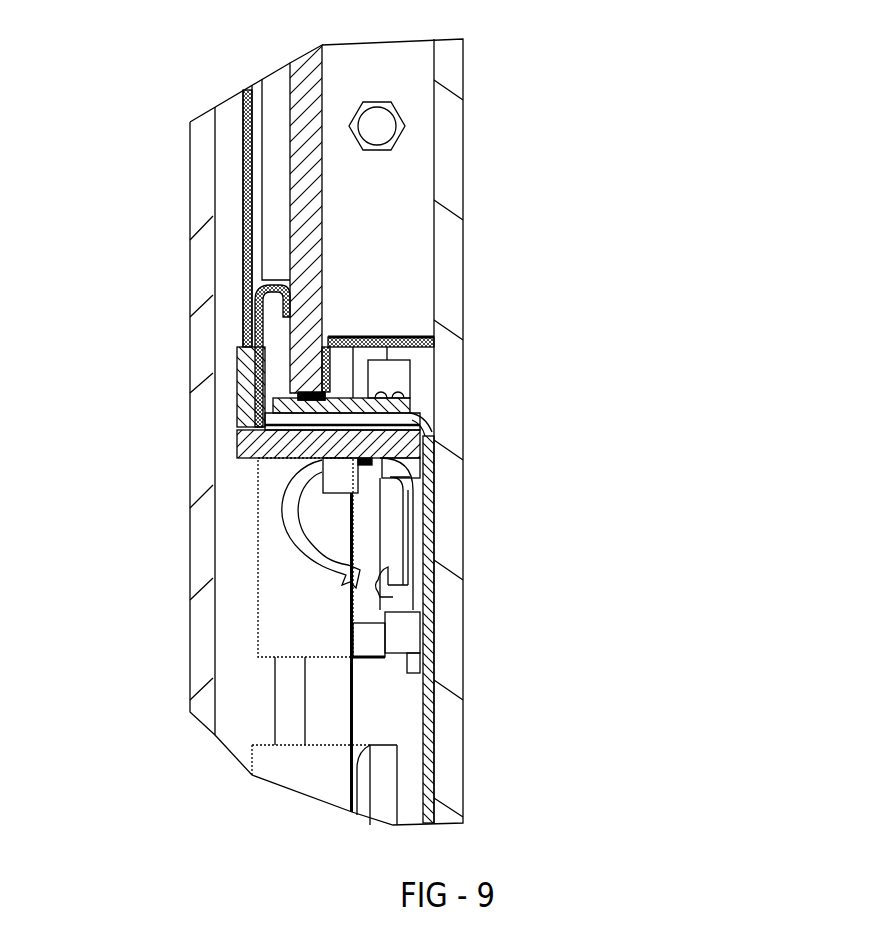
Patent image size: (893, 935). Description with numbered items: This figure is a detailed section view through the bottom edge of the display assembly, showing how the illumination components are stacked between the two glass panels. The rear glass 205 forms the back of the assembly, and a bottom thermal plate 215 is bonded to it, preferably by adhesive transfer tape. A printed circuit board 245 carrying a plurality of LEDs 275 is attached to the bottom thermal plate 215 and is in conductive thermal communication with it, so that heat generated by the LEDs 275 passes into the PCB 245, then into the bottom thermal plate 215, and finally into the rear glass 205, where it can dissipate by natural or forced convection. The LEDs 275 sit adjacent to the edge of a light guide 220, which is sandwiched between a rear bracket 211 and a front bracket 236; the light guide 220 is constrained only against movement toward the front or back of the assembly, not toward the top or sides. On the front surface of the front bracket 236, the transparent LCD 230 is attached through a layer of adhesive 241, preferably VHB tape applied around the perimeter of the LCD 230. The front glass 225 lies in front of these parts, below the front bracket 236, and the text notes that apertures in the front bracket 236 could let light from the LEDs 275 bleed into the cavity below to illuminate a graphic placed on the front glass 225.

The rear glass 205 is at (465, 57).
The light guide 220 is at (289, 62).
The front glass 225 is at (190, 212).
The transparent LCD 230 is at (242, 226).
The front bracket 236 is at (255, 297).
The adhesive 241 is at (238, 358).
The printed circuit board 245 is at (243, 436).
The rear bracket 211 is at (440, 344).
The LEDs 275 is at (330, 383).
The bottom thermal plate 215 is at (430, 440).